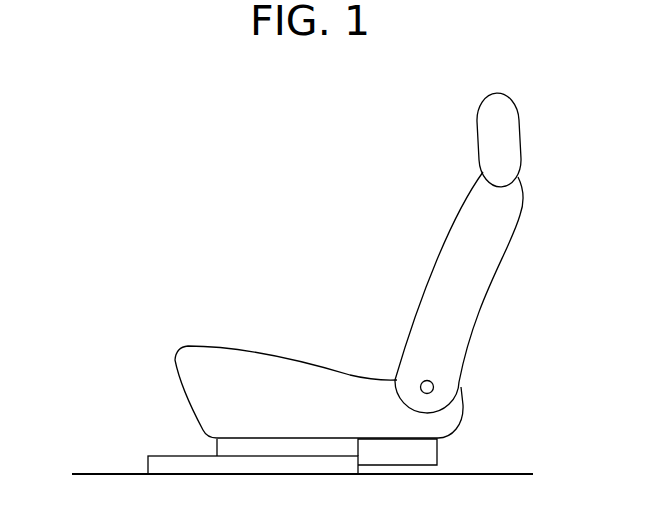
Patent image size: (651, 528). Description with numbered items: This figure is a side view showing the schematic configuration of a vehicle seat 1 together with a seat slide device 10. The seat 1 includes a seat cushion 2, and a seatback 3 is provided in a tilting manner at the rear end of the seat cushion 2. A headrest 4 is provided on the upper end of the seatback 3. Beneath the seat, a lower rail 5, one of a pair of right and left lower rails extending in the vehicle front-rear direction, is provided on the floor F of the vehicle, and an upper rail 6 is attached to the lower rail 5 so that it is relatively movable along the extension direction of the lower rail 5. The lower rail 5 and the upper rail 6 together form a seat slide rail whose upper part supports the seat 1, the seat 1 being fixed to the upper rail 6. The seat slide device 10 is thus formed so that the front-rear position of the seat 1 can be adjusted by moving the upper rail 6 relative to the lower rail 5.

The seat 1 is at (197, 145).
The seat slide device 10 is at (122, 333).
The seat cushion 2 is at (222, 346).
The seatback 3 is at (477, 310).
The headrest 4 is at (518, 119).
The lower rail 5 is at (162, 456).
The upper rail 6 is at (437, 451).
The floor F is at (83, 474).